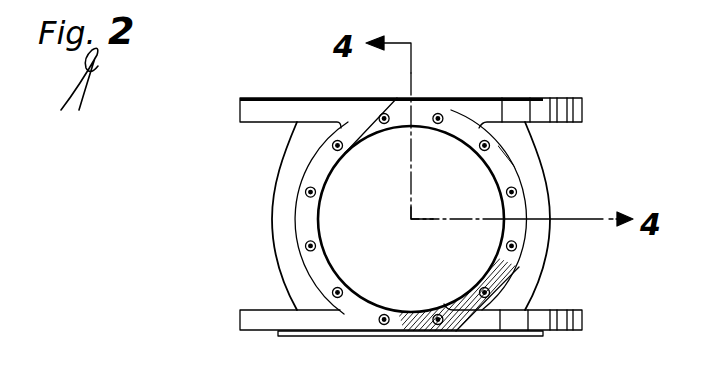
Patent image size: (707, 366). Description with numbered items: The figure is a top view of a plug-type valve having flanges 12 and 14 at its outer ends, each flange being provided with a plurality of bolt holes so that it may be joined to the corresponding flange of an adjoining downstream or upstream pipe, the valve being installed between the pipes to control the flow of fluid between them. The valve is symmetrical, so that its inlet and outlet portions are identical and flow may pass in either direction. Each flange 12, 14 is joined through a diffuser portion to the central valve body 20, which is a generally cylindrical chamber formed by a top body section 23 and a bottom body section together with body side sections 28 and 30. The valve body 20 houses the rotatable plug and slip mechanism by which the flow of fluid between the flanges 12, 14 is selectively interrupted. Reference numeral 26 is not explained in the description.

The flange 12 is at (242, 310).
The flange 14 is at (244, 98).
The valve body 20 is at (294, 210).
The top body section 23 is at (392, 224).
The reinforcing rib 26 is at (519, 186).
The body side section 28 is at (541, 272).
The body side section 30 is at (276, 272).